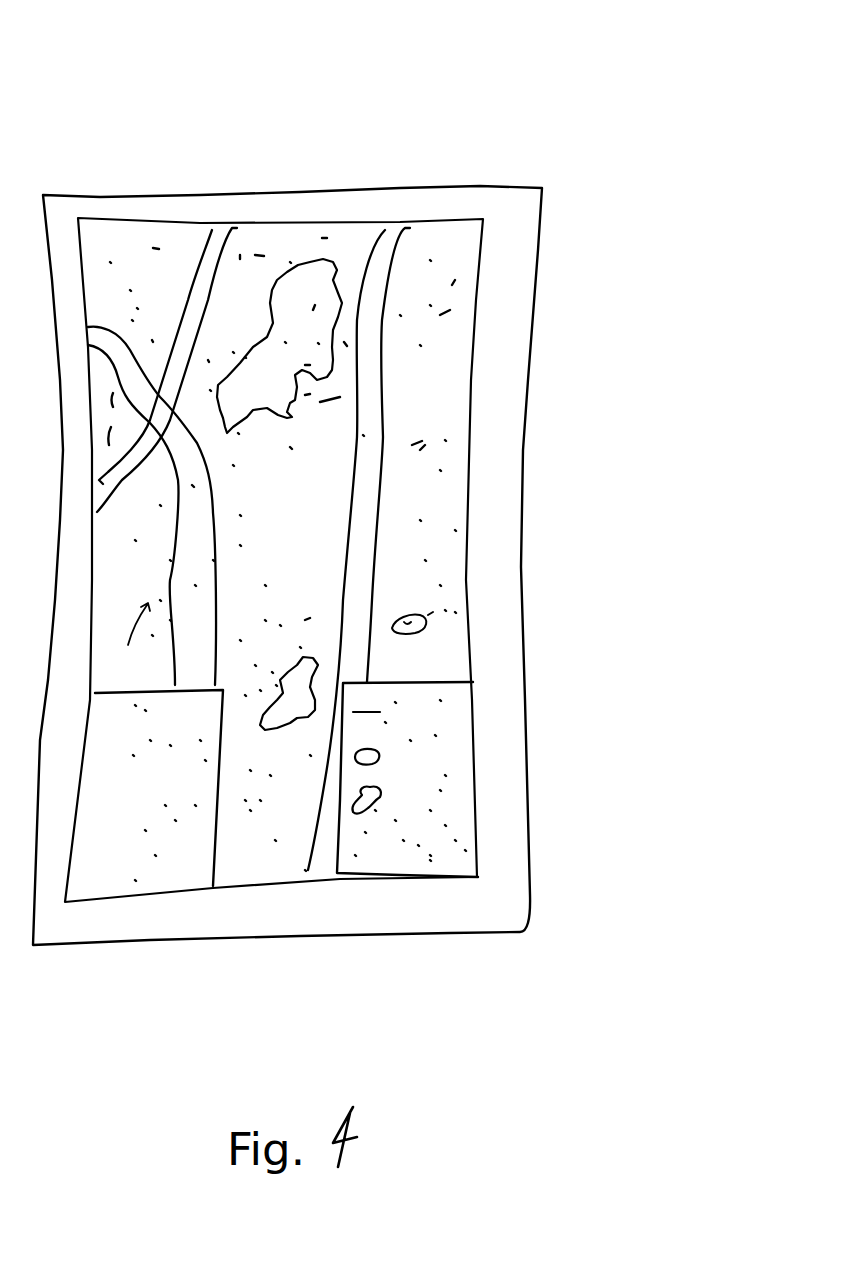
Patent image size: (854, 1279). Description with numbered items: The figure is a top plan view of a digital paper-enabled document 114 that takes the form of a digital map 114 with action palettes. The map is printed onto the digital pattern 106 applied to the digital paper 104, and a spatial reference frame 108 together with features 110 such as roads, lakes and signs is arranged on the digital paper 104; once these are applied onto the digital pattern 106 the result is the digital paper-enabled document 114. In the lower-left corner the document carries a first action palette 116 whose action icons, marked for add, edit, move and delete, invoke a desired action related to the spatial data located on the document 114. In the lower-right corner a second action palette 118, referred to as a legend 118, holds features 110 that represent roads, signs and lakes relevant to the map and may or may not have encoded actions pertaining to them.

The digital paper 104 is at (520, 478).
The digital pattern 106 is at (415, 413).
The spatial reference frame 108 is at (469, 557).
The feature 110 is at (396, 344).
The digital paper-enabled document 114 is at (422, 107).
The first action palette 116 is at (120, 880).
The second action palette 118 is at (453, 812).